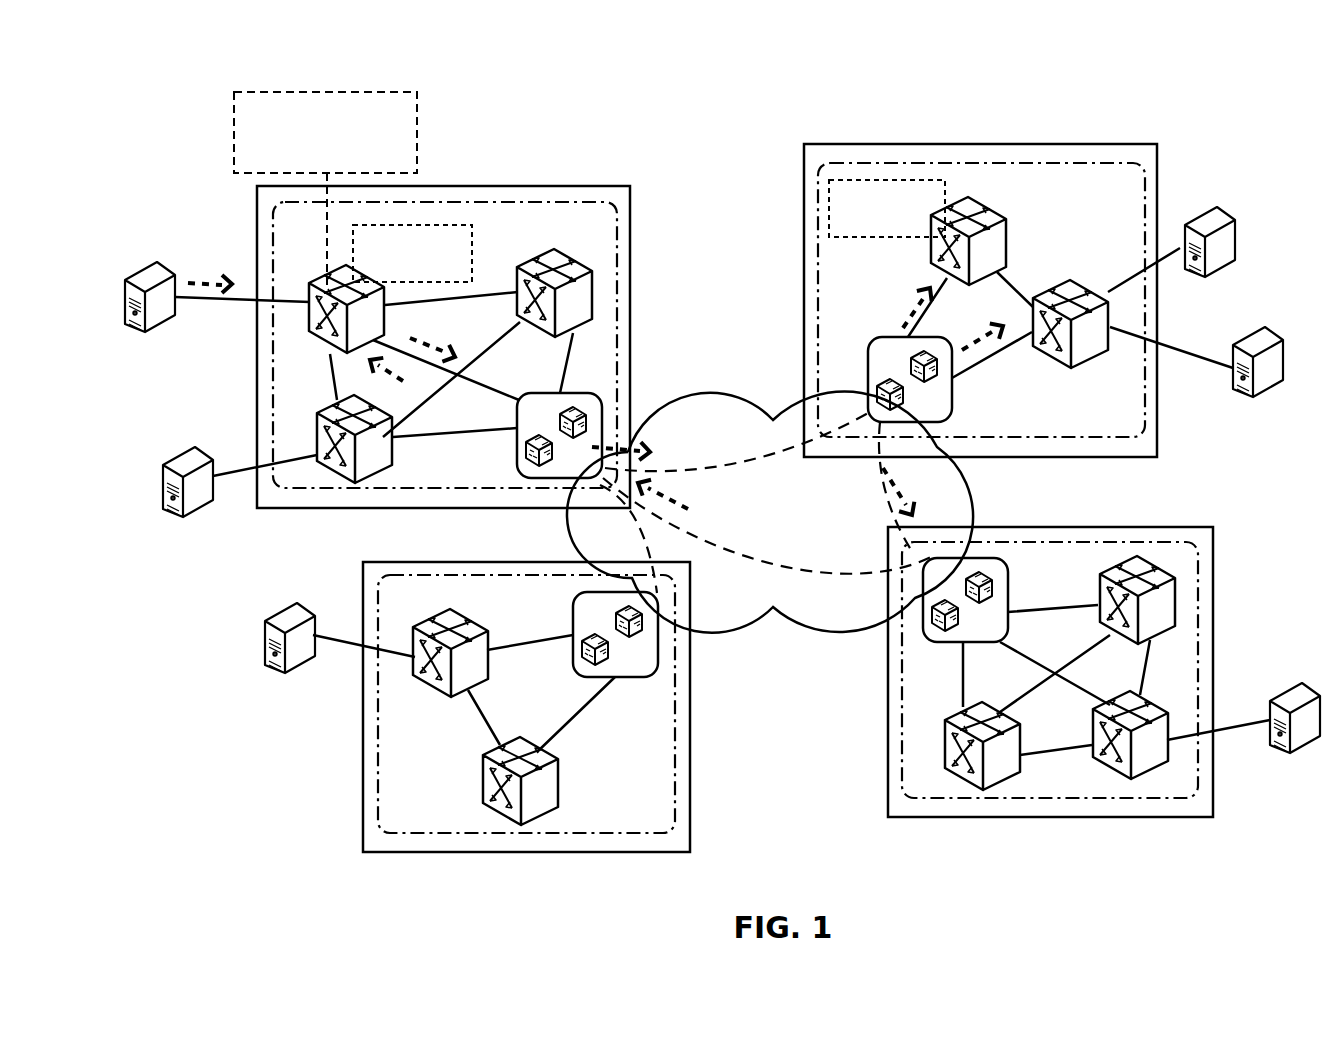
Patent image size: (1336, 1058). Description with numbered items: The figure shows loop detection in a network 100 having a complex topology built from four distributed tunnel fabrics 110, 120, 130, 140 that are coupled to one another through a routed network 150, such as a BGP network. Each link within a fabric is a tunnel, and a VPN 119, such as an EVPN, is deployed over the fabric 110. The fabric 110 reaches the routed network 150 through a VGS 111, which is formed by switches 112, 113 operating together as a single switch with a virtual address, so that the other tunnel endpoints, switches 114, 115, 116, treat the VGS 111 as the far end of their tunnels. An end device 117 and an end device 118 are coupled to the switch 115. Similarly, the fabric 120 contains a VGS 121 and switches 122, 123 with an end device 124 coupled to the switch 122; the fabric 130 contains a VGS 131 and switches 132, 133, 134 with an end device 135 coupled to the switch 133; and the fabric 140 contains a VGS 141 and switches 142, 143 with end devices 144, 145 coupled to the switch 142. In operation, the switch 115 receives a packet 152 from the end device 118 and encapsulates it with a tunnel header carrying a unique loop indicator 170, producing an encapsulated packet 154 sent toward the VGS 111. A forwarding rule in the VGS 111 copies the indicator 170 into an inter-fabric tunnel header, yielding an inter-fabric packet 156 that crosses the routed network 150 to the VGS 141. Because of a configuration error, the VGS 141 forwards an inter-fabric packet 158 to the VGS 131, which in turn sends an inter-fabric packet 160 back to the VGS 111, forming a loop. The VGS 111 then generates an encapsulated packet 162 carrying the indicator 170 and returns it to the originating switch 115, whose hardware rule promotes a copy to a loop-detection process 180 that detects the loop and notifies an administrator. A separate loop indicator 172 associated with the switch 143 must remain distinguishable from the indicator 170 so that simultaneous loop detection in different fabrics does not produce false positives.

The network 100 is at (196, 146).
The tunnel fabric 110 is at (577, 186).
The VGS 111 is at (538, 419).
The switch 112 is at (524, 432).
The switch 113 is at (580, 404).
The switch 114 is at (540, 262).
The switch 115 is at (320, 325).
The switch 116 is at (320, 433).
The end device 117 is at (169, 455).
The end device 118 is at (131, 268).
The VPN 119 is at (618, 274).
The tunnel fabric 120 is at (528, 852).
The VGS 121 is at (575, 664).
The switch 122 is at (478, 622).
The switch 123 is at (483, 778).
The end device 124 is at (269, 612).
The tunnel fabric 130 is at (1050, 817).
The VGS 131 is at (1010, 603).
The switch 132 is at (942, 750).
The switch 133 is at (1150, 705).
The switch 134 is at (1120, 562).
The end device 135 is at (1281, 693).
The tunnel fabric 140 is at (975, 144).
The VGS 141 is at (955, 410).
The switch 142 is at (1100, 360).
The switch 143 is at (995, 213).
The end device 144 is at (1243, 340).
The end device 145 is at (1237, 240).
The routed network 150 is at (822, 635).
The packet 152 is at (207, 276).
The encapsulated packet 154 is at (445, 342).
The inter-fabric packet 156 is at (655, 441).
The inter-fabric packet 158 is at (905, 482).
The inter-fabric packet 160 is at (681, 500).
The encapsulated packet 162 is at (392, 373).
The loop indicator 170 is at (399, 275).
The loop indicator 172 is at (874, 230).
The loop-detection process 180 is at (311, 163).